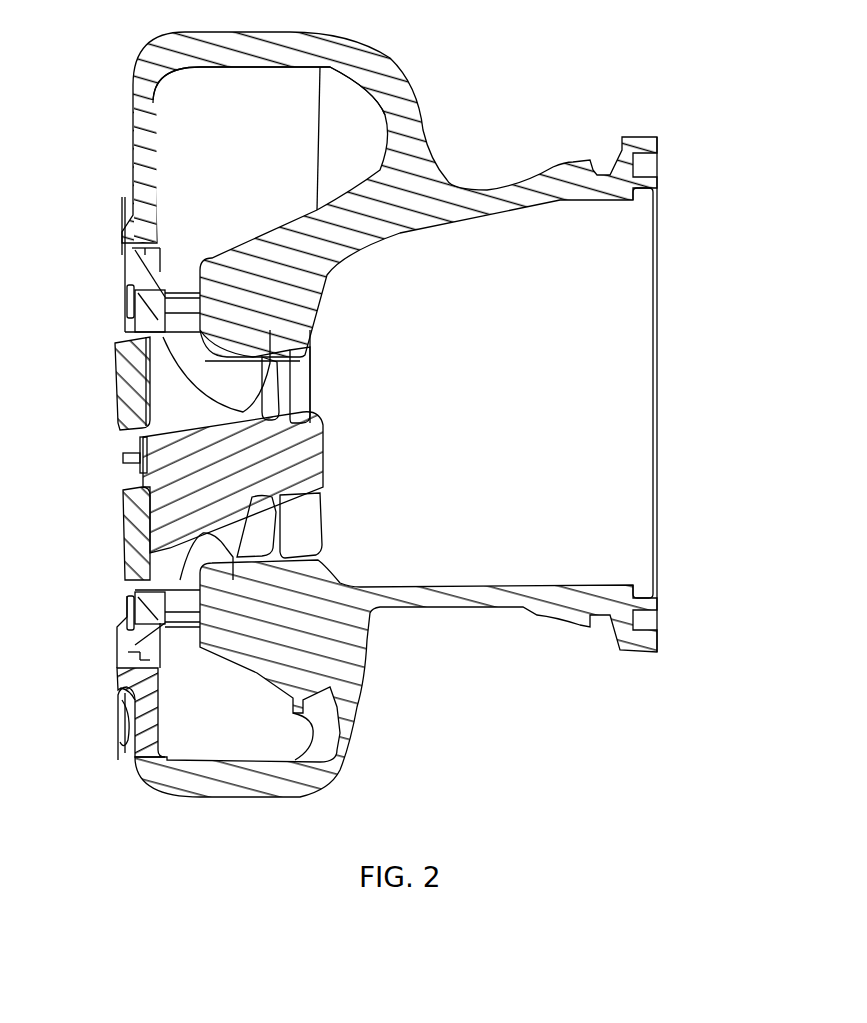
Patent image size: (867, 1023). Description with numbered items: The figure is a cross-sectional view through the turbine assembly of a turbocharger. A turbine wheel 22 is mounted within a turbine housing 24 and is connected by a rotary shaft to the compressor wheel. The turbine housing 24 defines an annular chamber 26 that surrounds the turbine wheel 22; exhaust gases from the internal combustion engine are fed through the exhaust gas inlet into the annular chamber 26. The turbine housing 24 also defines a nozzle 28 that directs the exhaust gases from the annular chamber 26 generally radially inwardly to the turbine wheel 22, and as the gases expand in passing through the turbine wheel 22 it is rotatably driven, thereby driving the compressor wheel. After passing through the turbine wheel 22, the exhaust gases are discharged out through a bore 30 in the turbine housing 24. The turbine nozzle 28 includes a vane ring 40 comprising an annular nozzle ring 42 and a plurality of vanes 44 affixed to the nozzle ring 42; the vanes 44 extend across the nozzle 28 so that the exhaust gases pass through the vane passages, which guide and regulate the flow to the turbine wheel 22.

The turbine wheel 22 is at (330, 513).
The turbine housing 24 is at (448, 180).
The annular chamber 26 is at (236, 92).
The nozzle 28 is at (180, 272).
The bore 30 is at (300, 378).
The vane ring 40 is at (112, 288).
The annular nozzle ring 42 is at (143, 643).
The vanes 44 is at (182, 622).